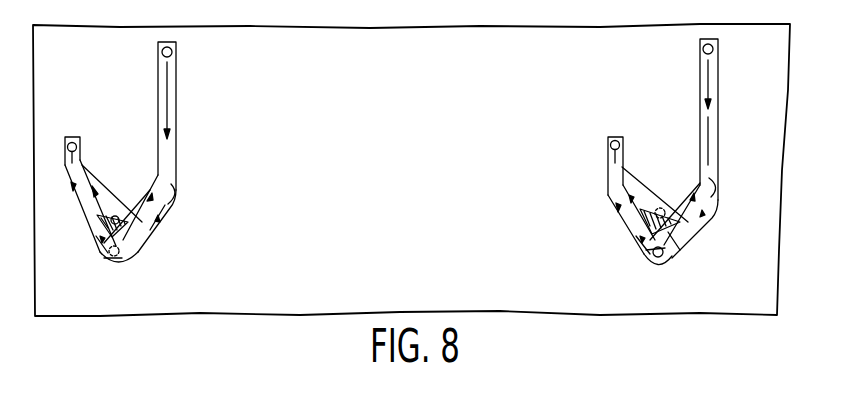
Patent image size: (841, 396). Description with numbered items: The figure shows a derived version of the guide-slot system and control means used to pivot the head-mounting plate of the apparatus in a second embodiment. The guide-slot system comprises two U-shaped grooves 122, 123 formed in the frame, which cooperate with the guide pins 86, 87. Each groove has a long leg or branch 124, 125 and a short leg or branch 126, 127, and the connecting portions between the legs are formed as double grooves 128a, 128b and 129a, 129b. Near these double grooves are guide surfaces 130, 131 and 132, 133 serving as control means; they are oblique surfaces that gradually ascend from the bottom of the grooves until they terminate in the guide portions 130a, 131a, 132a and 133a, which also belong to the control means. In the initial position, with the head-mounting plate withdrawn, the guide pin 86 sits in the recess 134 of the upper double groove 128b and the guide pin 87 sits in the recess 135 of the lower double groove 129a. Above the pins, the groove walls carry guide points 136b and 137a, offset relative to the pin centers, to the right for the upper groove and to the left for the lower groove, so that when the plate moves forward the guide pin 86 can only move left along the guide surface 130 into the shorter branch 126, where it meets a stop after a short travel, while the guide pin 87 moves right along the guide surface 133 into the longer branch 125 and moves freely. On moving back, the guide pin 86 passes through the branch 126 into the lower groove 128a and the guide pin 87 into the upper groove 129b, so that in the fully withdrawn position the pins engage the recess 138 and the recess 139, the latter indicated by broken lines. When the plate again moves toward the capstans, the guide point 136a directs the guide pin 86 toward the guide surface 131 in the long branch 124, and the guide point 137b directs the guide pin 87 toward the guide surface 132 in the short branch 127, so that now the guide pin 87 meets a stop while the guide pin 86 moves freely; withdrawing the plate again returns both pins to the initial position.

The guide pin 86 is at (117, 268).
The guide pin 87 is at (658, 259).
The U-shaped groove 122 is at (180, 220).
The U-shaped groove 123 is at (698, 243).
The long leg or branch 124 is at (169, 149).
The long leg or branch 125 is at (713, 138).
The short leg or branch 126 is at (69, 196).
The short leg or branch 127 is at (610, 173).
The lower double groove 128a is at (107, 253).
The upper double groove 128b is at (108, 202).
The lower double groove 129a is at (650, 258).
The upper double groove 129b is at (650, 200).
The guide surface 130 is at (97, 168).
The guide portion 130a is at (62, 165).
The guide surface 131 is at (165, 207).
The guide portion 131a is at (168, 184).
The guide surface 132 is at (642, 167).
The guide portion 132a is at (622, 162).
The guide surface 133 is at (705, 203).
The guide portion 133a is at (712, 182).
The recess 134 is at (131, 225).
The recess 135 is at (670, 253).
The guide point 136a is at (108, 265).
The guide point 136b is at (152, 232).
The guide point 137a is at (643, 253).
The guide point 137b is at (690, 222).
The recess 138 is at (132, 250).
The recess 139 is at (616, 220).